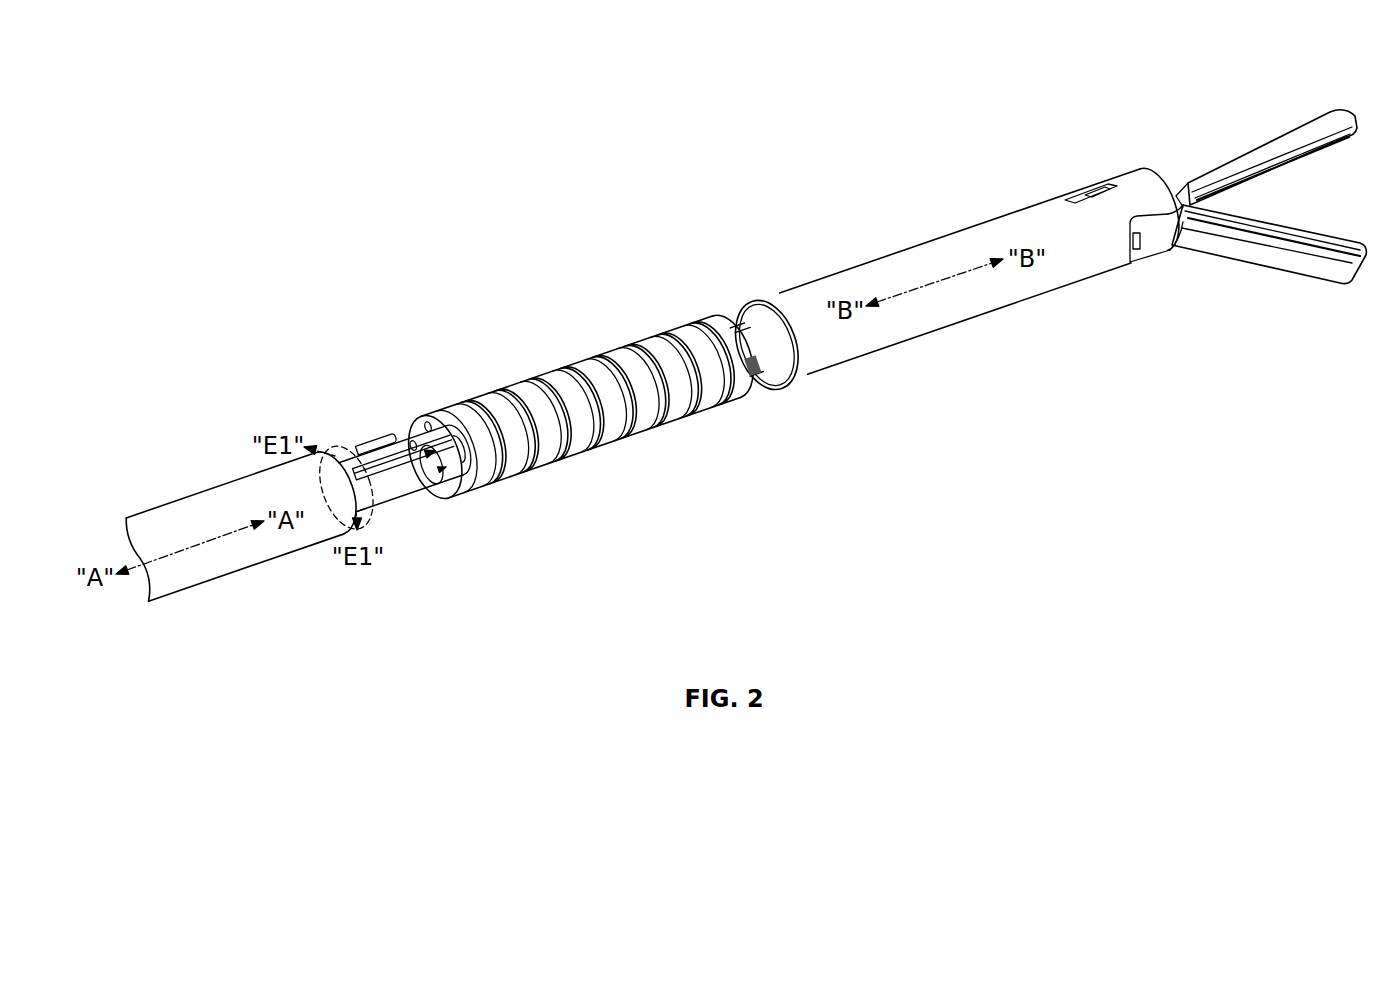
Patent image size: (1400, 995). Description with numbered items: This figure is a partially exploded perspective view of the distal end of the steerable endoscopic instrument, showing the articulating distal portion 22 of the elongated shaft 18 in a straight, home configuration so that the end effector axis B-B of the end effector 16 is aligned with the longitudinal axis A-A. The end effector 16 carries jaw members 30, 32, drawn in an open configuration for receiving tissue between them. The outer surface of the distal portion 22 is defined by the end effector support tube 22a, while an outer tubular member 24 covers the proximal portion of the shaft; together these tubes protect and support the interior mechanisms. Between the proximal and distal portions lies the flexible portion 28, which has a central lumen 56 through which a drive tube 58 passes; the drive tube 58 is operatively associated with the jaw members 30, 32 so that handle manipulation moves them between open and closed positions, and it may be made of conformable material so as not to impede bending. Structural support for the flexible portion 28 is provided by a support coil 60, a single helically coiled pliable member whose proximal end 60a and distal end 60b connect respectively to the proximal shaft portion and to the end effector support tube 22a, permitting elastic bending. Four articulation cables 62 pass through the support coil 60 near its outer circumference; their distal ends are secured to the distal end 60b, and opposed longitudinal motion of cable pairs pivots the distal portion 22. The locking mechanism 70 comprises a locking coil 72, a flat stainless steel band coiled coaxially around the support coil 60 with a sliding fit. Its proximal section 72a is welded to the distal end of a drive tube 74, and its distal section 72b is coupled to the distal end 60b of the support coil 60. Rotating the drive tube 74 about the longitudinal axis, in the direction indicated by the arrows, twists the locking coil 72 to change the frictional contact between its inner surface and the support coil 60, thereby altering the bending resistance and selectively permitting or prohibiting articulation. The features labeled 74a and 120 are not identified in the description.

The end effector 16 is at (1198, 110).
The elongated shaft 18 is at (349, 250).
The articulating distal portion 22 is at (922, 90).
The end effector support tube 22a is at (1003, 312).
The outer tubular member 24 is at (248, 573).
The flexible portion 28 is at (525, 360).
The jaw member 30 is at (1327, 115).
The jaw member 32 is at (1283, 262).
The central lumen 56 is at (407, 440).
The drive tube 58 is at (378, 476).
The support coil 60 is at (611, 404).
The proximal end of support coil 60a is at (416, 428).
The distal end of support coil 60b is at (770, 370).
The articulation cables 62 is at (376, 443).
The locking mechanism 70 is at (358, 614).
The locking coil 72 is at (678, 388).
The proximal section of locking coil 72a is at (465, 464).
The distal section of locking coil 72b is at (748, 375).
The drive tube 74 is at (377, 510).
The flange of inner tube 74a is at (445, 487).
The outer sleeve 120 is at (203, 496).